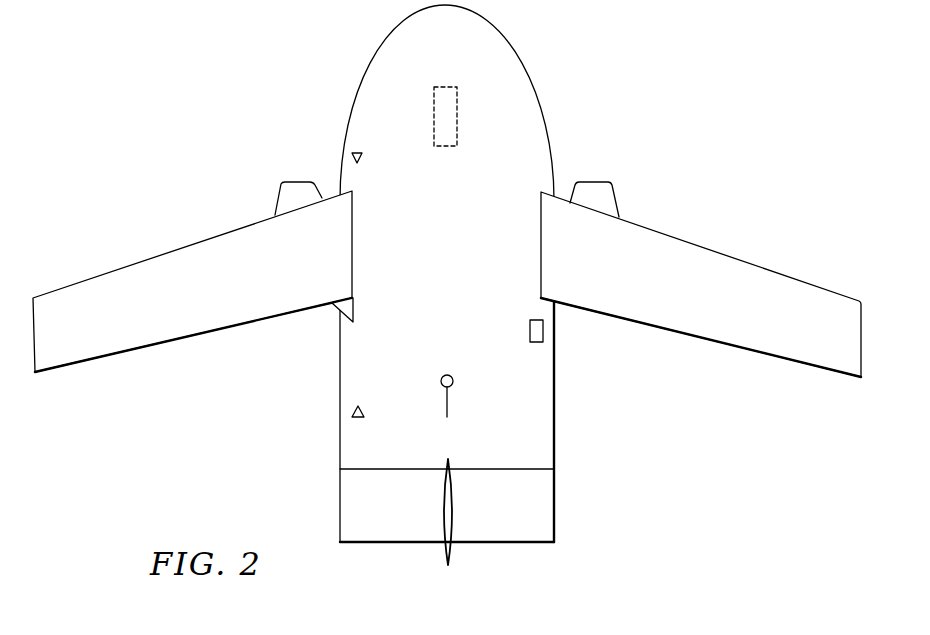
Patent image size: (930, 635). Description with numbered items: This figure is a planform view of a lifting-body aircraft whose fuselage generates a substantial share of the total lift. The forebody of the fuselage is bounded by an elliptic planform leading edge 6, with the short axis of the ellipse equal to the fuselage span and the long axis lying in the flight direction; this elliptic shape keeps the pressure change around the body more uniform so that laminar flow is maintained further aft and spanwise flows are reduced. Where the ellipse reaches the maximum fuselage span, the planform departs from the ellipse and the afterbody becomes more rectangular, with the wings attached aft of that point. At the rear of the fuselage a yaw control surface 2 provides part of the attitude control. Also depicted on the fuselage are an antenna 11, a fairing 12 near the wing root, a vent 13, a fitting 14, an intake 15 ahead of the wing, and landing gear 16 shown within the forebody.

The yaw control surface 2 is at (452, 515).
The planform leading edge 6 is at (537, 103).
The antenna 11 is at (453, 384).
The fairing 12 is at (349, 302).
The vent 13 is at (352, 418).
The fitting 14 is at (543, 331).
The intake 15 is at (350, 152).
The landing gear 16 is at (451, 147).